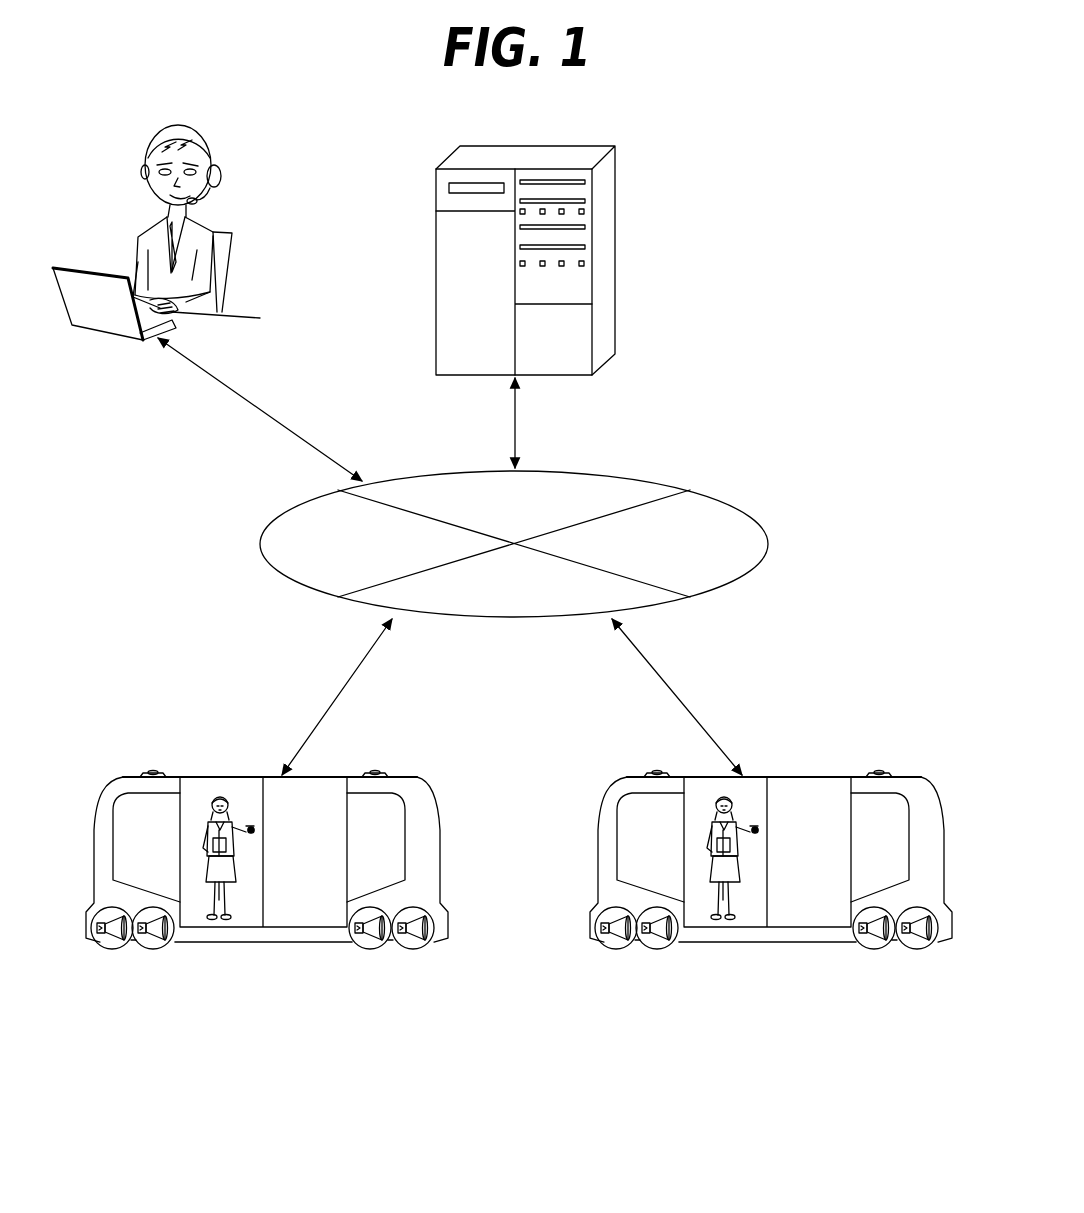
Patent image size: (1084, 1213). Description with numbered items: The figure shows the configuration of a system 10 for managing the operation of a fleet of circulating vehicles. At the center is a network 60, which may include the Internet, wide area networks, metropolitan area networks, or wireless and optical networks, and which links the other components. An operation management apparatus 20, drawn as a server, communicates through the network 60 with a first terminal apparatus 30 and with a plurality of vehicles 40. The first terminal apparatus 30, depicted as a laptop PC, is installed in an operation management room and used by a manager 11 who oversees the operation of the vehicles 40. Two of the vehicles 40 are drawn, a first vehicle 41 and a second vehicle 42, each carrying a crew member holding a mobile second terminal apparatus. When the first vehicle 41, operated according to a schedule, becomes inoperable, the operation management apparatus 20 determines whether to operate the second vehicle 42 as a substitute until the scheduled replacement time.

The system 10 is at (797, 324).
The manager 11 is at (143, 238).
The operation management apparatus 20 is at (605, 254).
The first terminal apparatus 30 is at (105, 315).
The vehicles 40 is at (519, 922).
The first vehicle 41 is at (267, 899).
The second vehicle 42 is at (771, 899).
The network 60 is at (768, 544).